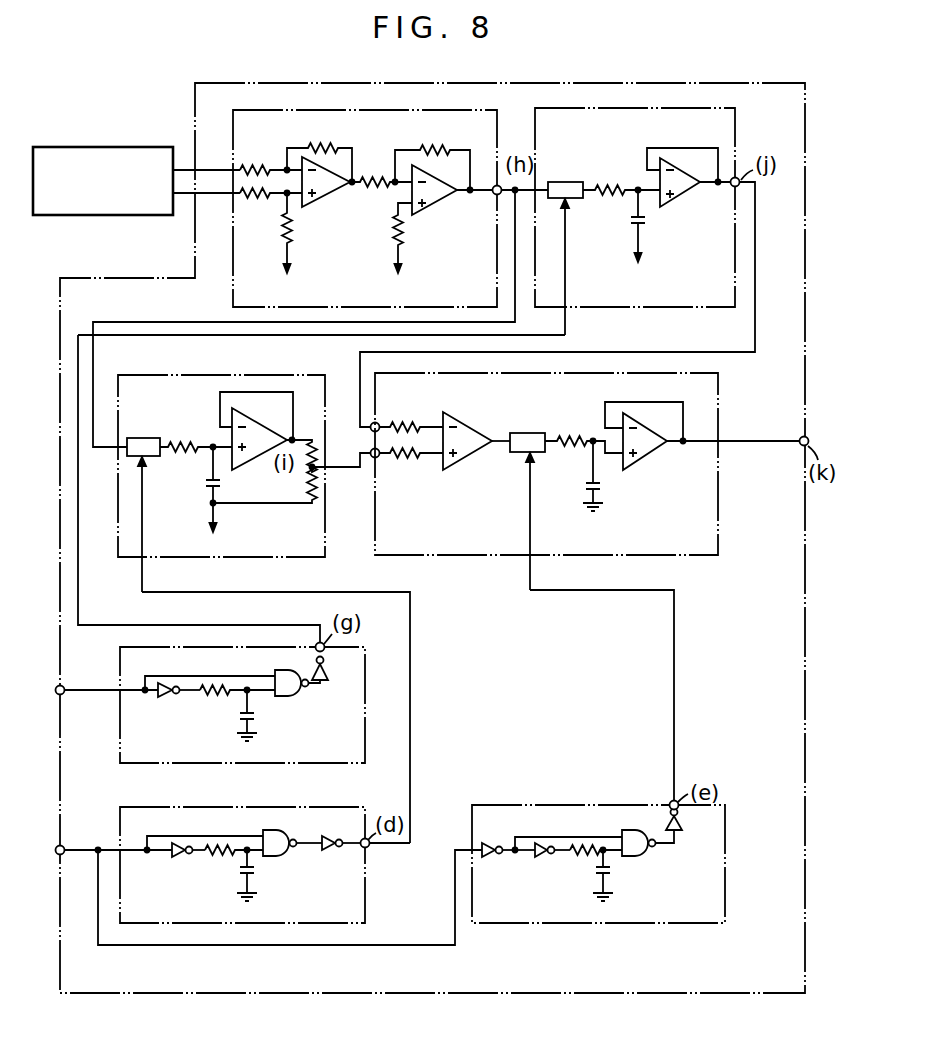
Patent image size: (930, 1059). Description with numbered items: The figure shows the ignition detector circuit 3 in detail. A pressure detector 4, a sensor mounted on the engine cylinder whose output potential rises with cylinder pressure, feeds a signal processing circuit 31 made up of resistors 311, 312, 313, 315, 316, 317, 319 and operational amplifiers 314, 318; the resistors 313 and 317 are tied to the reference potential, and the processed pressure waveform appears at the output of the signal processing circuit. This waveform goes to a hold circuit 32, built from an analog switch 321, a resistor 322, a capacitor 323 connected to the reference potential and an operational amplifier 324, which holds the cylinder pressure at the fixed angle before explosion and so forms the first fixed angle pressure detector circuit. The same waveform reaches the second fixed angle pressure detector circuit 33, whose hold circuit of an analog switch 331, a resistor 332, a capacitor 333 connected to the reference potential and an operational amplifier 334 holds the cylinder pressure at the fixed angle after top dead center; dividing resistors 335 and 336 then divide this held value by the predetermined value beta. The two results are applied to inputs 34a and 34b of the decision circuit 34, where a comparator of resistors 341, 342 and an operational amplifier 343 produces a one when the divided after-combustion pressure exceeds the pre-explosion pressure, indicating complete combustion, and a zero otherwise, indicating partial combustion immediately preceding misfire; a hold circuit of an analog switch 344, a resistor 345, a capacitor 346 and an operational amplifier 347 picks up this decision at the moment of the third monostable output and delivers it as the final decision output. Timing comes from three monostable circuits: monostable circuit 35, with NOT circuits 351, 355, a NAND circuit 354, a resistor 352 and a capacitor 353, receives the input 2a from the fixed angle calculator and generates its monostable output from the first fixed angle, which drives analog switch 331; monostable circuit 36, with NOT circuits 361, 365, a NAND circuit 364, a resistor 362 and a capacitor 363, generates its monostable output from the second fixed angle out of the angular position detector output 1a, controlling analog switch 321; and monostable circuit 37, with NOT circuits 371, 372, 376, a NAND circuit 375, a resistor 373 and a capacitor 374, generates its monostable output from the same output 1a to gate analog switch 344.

The ignition detector circuit 3 is at (330, 83).
The pressure detector 4 is at (100, 147).
The signal processing circuit 31 is at (389, 110).
The hold circuit 32 is at (625, 108).
The second fixed angle pressure detector circuit 33 is at (200, 375).
The decision circuit 34 is at (718, 432).
The monostable circuit 35 is at (365, 690).
The monostable circuit 36 is at (254, 807).
The monostable circuit 37 is at (583, 805).
The resistor 311 is at (256, 164).
The resistor 312 is at (257, 200).
The resistor 313 is at (299, 231).
The operational amplifier 314 is at (326, 199).
The resistor 315 is at (326, 147).
The resistor 316 is at (375, 180).
The resistor 317 is at (407, 231).
The operational amplifier 318 is at (447, 199).
The resistor 319 is at (442, 147).
The analog switch 321 is at (574, 181).
The resistor 322 is at (609, 195).
The capacitor 323 is at (646, 227).
The operational amplifier 324 is at (688, 197).
The analog switch 331 is at (151, 438).
The resistor 332 is at (181, 456).
The capacitor 333 is at (222, 482).
The operational amplifier 334 is at (268, 402).
The dividing resistor 335 is at (317, 440).
The dividing resistor 336 is at (306, 498).
The resistor 341 is at (414, 420).
The resistor 342 is at (412, 463).
The operational amplifier 343 is at (476, 459).
The analog switch 344 is at (526, 431).
The resistor 345 is at (567, 448).
The capacitor 346 is at (604, 484).
The operational amplifier 347 is at (665, 448).
The NOT circuit 351 is at (167, 698).
The resistor 352 is at (210, 696).
The capacitor 353 is at (258, 715).
The NAND circuit 354 is at (271, 672).
The NOT circuit 355 is at (328, 680).
The NOT circuit 361 is at (180, 860).
The resistor 362 is at (214, 854).
The capacitor 363 is at (258, 875).
The NAND circuit 364 is at (255, 828).
The NOT circuit 365 is at (330, 852).
The NOT circuit 371 is at (488, 858).
The NOT circuit 372 is at (538, 856).
The resistor 373 is at (584, 858).
The capacitor 374 is at (610, 875).
The NAND circuit 375 is at (635, 858).
The NOT circuit 376 is at (682, 826).
The output of the angular position detector 1a is at (64, 846).
The input terminal (signal 2a) 2a is at (64, 686).
The input terminal of circuit 34 34a is at (371, 427).
The input terminal of circuit 34 34b is at (373, 458).